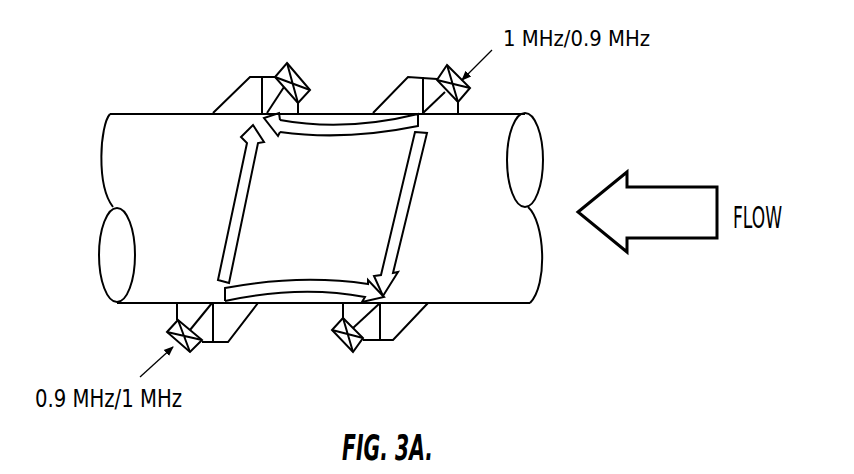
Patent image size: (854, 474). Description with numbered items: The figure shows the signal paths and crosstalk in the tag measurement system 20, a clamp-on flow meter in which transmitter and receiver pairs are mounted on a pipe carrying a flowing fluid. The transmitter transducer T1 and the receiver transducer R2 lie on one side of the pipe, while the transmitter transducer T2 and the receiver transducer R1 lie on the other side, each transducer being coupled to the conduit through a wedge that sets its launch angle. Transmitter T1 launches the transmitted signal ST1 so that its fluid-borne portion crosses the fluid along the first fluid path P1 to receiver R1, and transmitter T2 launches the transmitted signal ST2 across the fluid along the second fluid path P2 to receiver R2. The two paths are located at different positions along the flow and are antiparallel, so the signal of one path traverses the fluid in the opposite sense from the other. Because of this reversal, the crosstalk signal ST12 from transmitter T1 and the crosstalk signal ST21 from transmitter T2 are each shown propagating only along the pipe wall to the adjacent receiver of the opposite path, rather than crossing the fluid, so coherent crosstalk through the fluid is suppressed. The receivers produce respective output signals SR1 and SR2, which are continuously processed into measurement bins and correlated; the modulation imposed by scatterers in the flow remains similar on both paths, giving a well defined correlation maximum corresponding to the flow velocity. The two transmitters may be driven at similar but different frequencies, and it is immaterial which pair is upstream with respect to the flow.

The tag measurement system 20 is at (183, 70).
The receiver transducer R1 is at (383, 328).
The receiver transducer R2 is at (279, 88).
The transmitter transducer T1 is at (438, 89).
The transmitter transducer T2 is at (219, 327).
The receiver output signal SR1 is at (337, 350).
The receiver output signal SR2 is at (303, 73).
The transmitted signal ST1 is at (410, 214).
The transmitted signal ST2 is at (223, 204).
The crosstalk signal ST12 is at (341, 150).
The crosstalk signal ST21 is at (304, 273).
The first fluid path P1 is at (397, 208).
The second fluid path P2 is at (250, 212).